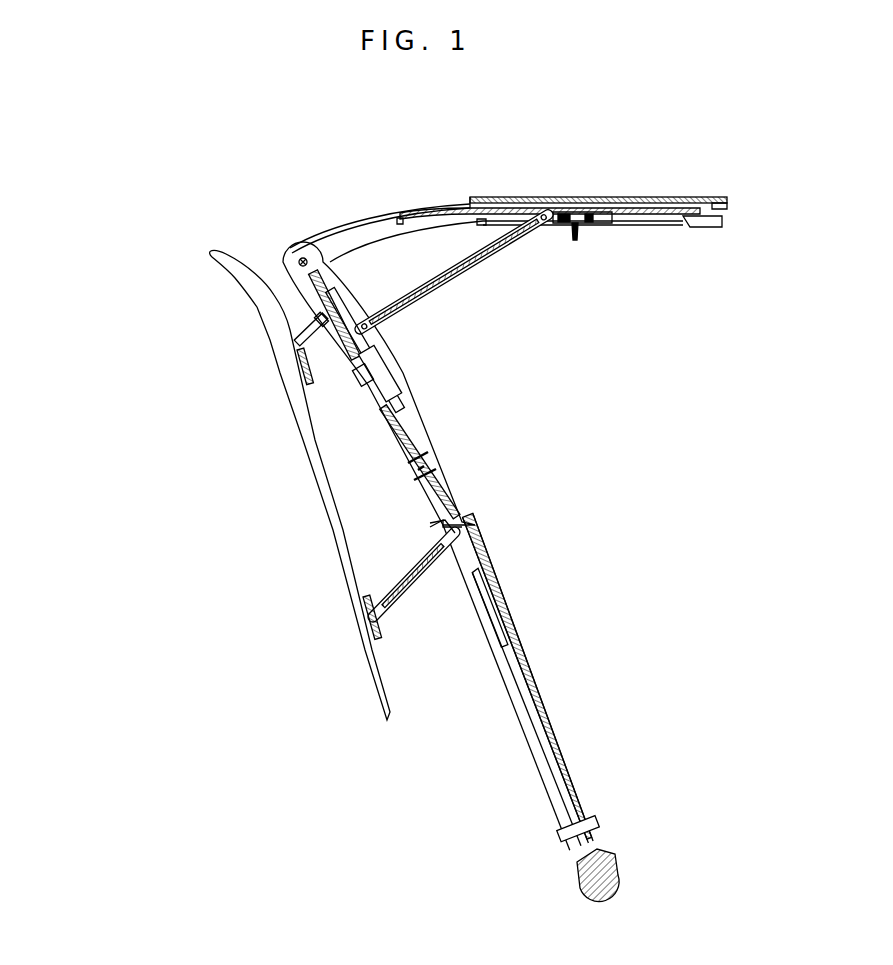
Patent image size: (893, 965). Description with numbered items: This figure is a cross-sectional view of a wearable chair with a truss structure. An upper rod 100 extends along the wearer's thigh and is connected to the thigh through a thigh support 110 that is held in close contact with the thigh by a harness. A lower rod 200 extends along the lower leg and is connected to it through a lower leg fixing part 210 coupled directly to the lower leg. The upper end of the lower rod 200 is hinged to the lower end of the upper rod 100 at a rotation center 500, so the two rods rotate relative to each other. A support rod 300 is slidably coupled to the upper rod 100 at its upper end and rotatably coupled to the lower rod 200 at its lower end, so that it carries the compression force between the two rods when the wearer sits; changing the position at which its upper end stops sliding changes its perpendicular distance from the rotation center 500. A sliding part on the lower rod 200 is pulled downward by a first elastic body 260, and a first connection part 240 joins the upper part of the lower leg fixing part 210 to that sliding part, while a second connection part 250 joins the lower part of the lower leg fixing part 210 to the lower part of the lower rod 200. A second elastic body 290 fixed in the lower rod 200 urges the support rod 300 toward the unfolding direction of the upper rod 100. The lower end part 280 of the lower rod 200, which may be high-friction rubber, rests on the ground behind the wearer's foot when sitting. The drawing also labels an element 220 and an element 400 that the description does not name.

The upper rod 100 is at (418, 205).
The thigh support 110 is at (668, 196).
The lower rod 200 is at (443, 472).
The lower leg fixing part 210 is at (227, 273).
The guide rail 220 is at (393, 402).
The first connection part 240 is at (296, 344).
The second connection part 250 is at (390, 594).
The first elastic body 260 is at (363, 376).
The lower end part 280 is at (613, 886).
The second elastic body 290 is at (363, 376).
The support rod 300 is at (452, 284).
The fastening portion 400 is at (575, 237).
The rotation center 500 is at (302, 252).